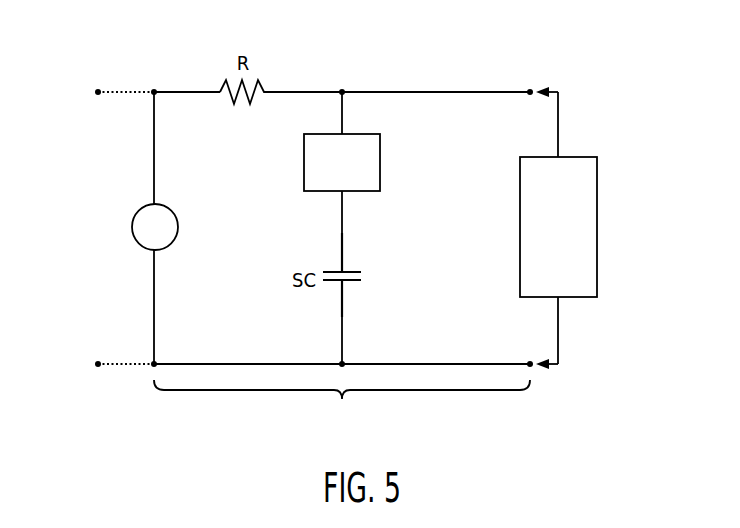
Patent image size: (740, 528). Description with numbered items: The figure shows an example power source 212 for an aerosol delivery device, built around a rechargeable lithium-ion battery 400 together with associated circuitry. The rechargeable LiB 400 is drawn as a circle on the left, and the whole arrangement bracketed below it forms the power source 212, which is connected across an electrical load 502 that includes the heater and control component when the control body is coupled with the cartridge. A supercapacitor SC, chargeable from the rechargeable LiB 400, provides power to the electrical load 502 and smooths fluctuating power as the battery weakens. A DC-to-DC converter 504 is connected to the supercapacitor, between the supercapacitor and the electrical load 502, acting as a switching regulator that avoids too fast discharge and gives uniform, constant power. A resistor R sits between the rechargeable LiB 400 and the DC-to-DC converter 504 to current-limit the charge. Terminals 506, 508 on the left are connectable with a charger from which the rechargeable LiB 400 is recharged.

The rechargeable LiB 400 is at (132, 227).
The electrical load 502 is at (569, 214).
The DC-to-DC converter 504 is at (380, 163).
The terminal 506 is at (124, 77).
The terminal 508 is at (124, 350).
The power source 212 is at (342, 407).